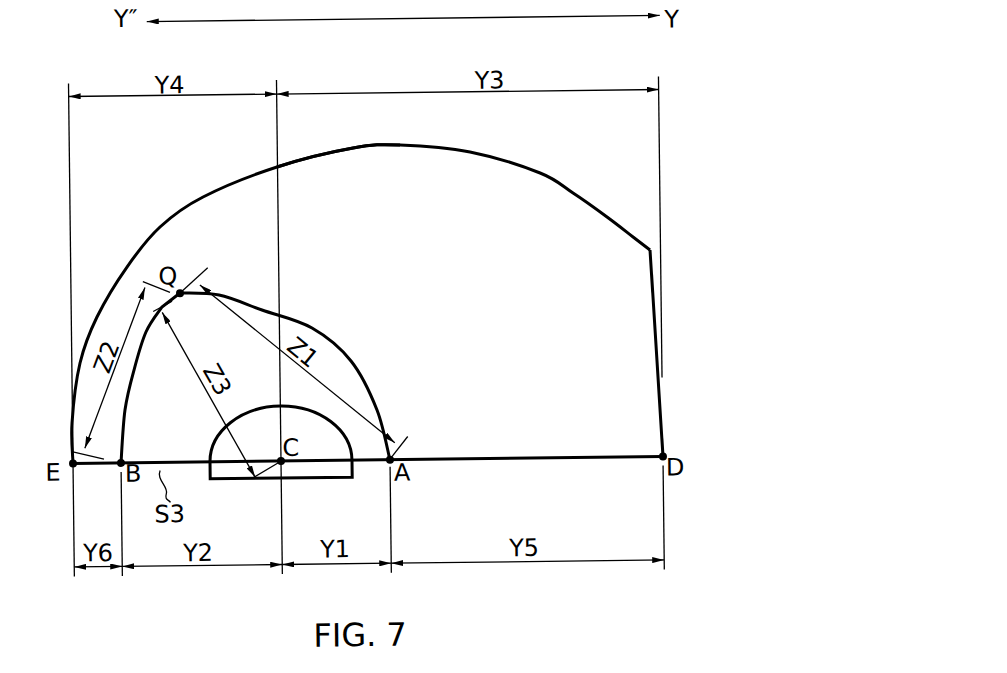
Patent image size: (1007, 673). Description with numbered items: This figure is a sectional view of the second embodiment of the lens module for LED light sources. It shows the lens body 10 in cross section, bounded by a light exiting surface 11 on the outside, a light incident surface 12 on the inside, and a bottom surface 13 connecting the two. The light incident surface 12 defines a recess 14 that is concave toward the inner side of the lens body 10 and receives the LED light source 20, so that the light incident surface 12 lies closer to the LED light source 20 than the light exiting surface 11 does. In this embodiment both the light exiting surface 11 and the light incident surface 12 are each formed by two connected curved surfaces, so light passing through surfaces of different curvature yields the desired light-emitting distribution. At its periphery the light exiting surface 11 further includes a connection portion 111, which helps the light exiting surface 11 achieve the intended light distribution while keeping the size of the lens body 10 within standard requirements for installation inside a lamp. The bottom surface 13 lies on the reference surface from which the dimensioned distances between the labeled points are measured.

The lens body 10 is at (563, 185).
The light exiting surface 11 is at (329, 151).
The connection portion 111 is at (657, 314).
The light incident surface 12 is at (312, 328).
The bottom surface 13 is at (537, 473).
The recess 14 is at (253, 301).
The LED light source 20 is at (313, 470).